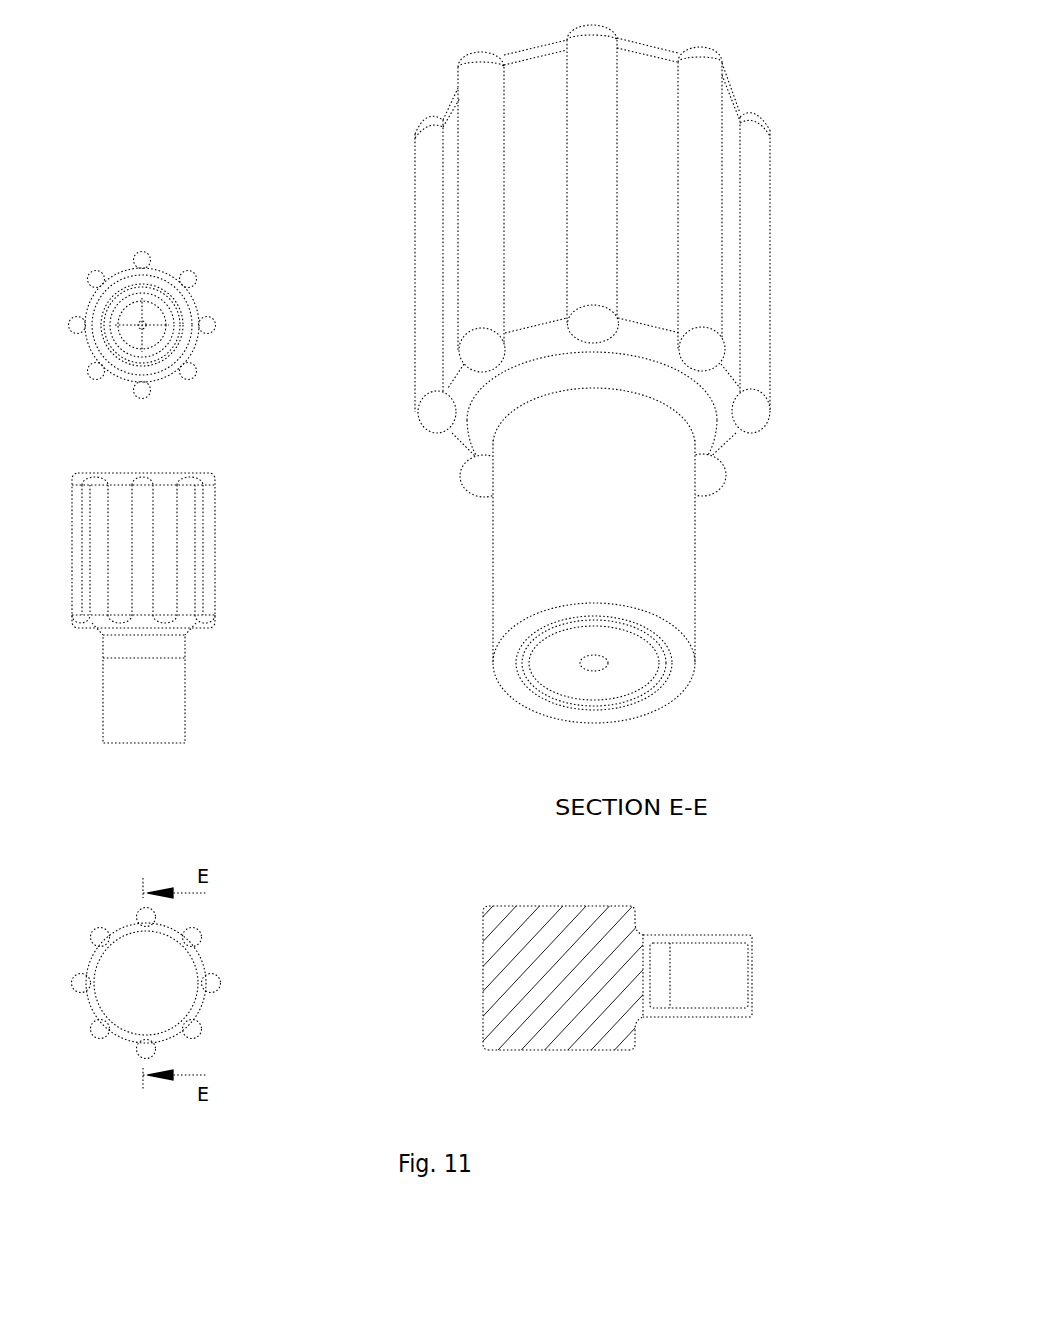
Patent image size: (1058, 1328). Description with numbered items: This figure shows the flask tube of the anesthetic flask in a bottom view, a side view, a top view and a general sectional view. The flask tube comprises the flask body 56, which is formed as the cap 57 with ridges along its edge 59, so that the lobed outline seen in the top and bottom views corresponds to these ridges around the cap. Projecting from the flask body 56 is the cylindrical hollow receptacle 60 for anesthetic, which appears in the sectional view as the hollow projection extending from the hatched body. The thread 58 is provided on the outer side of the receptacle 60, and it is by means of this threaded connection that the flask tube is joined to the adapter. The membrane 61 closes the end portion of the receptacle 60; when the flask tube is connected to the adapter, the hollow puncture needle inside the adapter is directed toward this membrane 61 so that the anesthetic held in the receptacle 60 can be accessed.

The flask body 56 is at (432, 857).
The cap 57 is at (115, 862).
The thread 58 is at (185, 688).
The edge 59 is at (140, 537).
The receptacle 60 is at (750, 852).
The membrane 61 is at (170, 283).